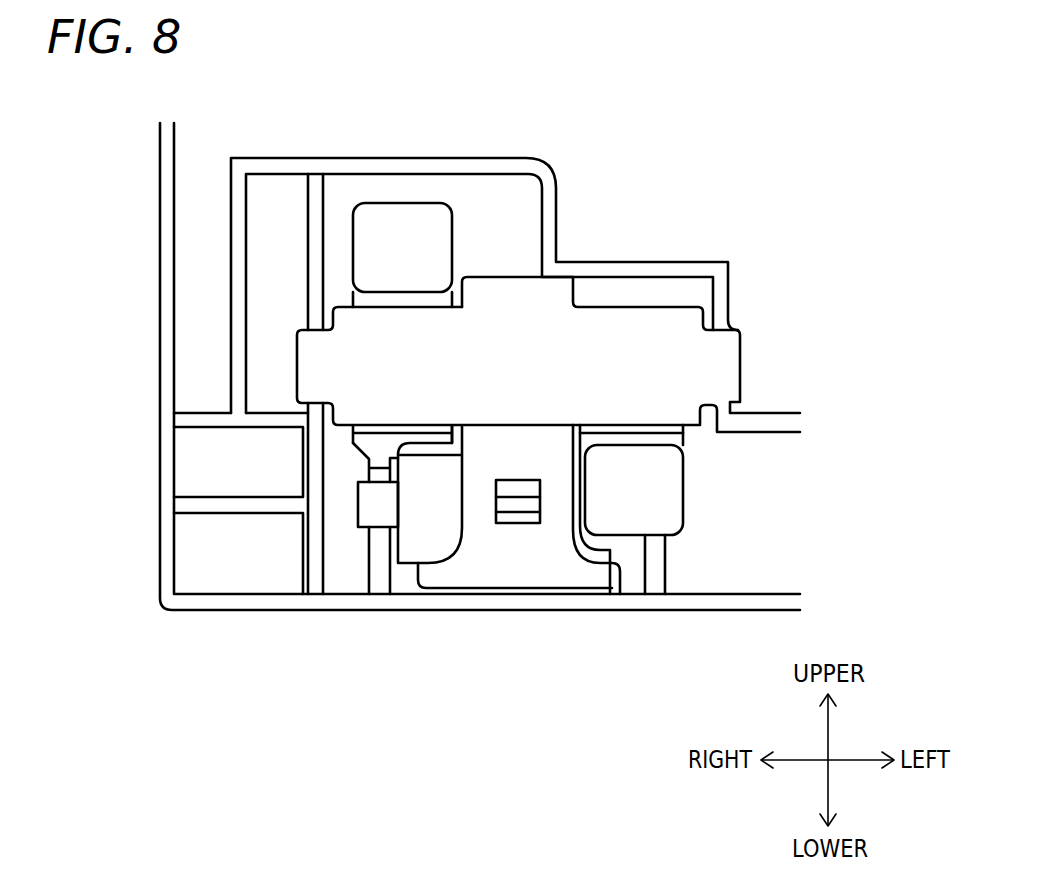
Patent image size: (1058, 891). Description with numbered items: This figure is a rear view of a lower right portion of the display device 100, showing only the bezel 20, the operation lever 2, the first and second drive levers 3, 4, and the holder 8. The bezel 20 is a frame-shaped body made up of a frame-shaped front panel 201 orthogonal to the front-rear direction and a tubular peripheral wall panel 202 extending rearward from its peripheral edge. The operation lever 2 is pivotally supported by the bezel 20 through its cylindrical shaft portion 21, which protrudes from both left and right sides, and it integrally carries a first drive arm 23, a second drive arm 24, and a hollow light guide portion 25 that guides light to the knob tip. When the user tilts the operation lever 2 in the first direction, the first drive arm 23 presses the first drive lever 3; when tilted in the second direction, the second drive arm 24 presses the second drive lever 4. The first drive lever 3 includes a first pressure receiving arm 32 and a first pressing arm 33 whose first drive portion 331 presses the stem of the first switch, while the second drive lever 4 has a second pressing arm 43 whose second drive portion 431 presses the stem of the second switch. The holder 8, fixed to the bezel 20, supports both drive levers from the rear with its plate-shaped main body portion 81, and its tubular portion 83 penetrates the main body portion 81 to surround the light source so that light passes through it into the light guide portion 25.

The display device 100 is at (425, 387).
The bezel 20 is at (425, 409).
The peripheral wall panel 202 is at (158, 370).
The front panel 201 is at (212, 585).
The first drive lever 3 is at (355, 311).
The first pressing arm 33 is at (363, 298).
The first drive portion 331 is at (370, 257).
The first pressure receiving arm 32 is at (357, 435).
The holder 8 is at (587, 302).
The main body portion 81 is at (667, 332).
The operation lever 2 is at (453, 576).
The shaft portion 21 is at (362, 503).
The first drive arm 23 is at (433, 540).
The tubular portion 83 is at (510, 523).
The light guide portion 25 is at (518, 507).
The second drive lever 4 is at (695, 575).
The second pressing arm 43 is at (668, 435).
The second drive portion 431 is at (673, 500).
The second drive arm 24 is at (607, 537).